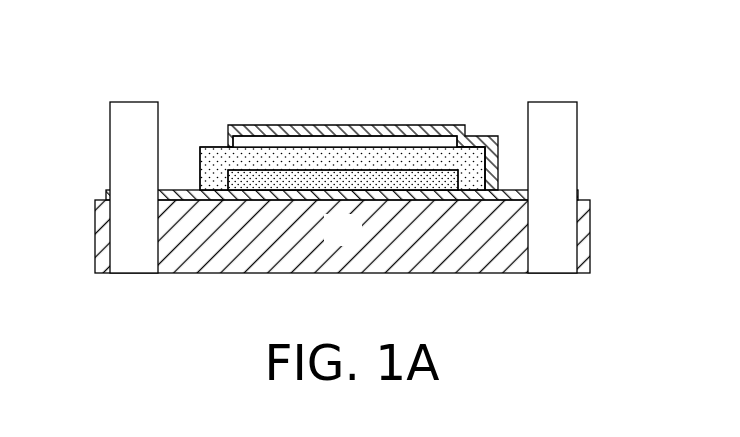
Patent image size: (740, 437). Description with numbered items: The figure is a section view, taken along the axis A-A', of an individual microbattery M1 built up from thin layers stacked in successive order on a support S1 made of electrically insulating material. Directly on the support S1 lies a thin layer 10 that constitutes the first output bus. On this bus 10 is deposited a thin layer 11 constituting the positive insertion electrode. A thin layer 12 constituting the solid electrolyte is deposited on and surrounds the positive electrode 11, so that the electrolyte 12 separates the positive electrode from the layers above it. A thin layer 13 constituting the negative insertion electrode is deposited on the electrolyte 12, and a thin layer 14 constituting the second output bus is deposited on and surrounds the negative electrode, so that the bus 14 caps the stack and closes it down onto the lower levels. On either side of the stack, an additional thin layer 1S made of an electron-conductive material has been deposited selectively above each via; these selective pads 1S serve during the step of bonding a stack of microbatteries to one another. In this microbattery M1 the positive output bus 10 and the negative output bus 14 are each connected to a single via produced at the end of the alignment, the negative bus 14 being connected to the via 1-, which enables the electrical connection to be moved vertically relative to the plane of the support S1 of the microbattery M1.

The thin layer constituting a first output bus 10 is at (190, 197).
The positive insertion electrode 11 is at (422, 178).
The solid electrolyte 12 is at (217, 155).
The negative insertion electrode 13 is at (281, 143).
The second output bus 14 is at (323, 133).
The microbattery M1 is at (342, 99).
The support S1 is at (342, 236).
The additional thin layer of electron-conductive material 1S is at (343, 187).
The via 1- is at (564, 237).